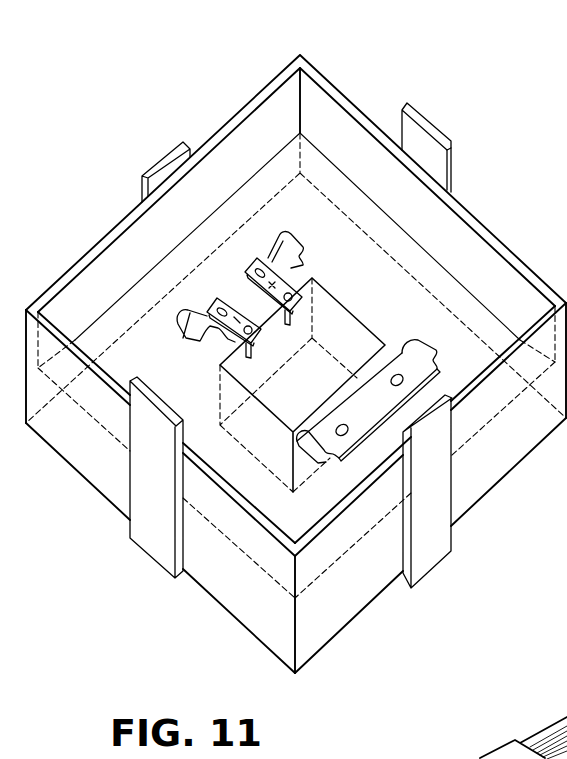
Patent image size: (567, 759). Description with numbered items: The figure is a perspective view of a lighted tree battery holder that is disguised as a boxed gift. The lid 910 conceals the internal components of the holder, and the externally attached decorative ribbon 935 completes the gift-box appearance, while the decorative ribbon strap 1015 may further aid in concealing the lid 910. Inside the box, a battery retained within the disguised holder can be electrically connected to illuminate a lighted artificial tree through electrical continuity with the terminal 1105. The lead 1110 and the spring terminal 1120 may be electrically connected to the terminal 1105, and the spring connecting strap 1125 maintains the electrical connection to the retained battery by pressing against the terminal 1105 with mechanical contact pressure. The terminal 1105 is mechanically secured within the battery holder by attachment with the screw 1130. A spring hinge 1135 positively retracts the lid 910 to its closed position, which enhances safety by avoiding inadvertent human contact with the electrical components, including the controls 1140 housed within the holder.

The lid 910 is at (323, 72).
The decorative ribbon 935 is at (453, 516).
The decorative ribbon strap 1015 is at (447, 137).
The terminal 1105 is at (252, 267).
The lead 1110 is at (248, 346).
The spring terminal 1120 is at (293, 240).
The spring connecting strap 1125 is at (293, 456).
The screw 1130 is at (260, 268).
The spring hinge 1135 is at (452, 190).
The controls 1140 is at (350, 313).